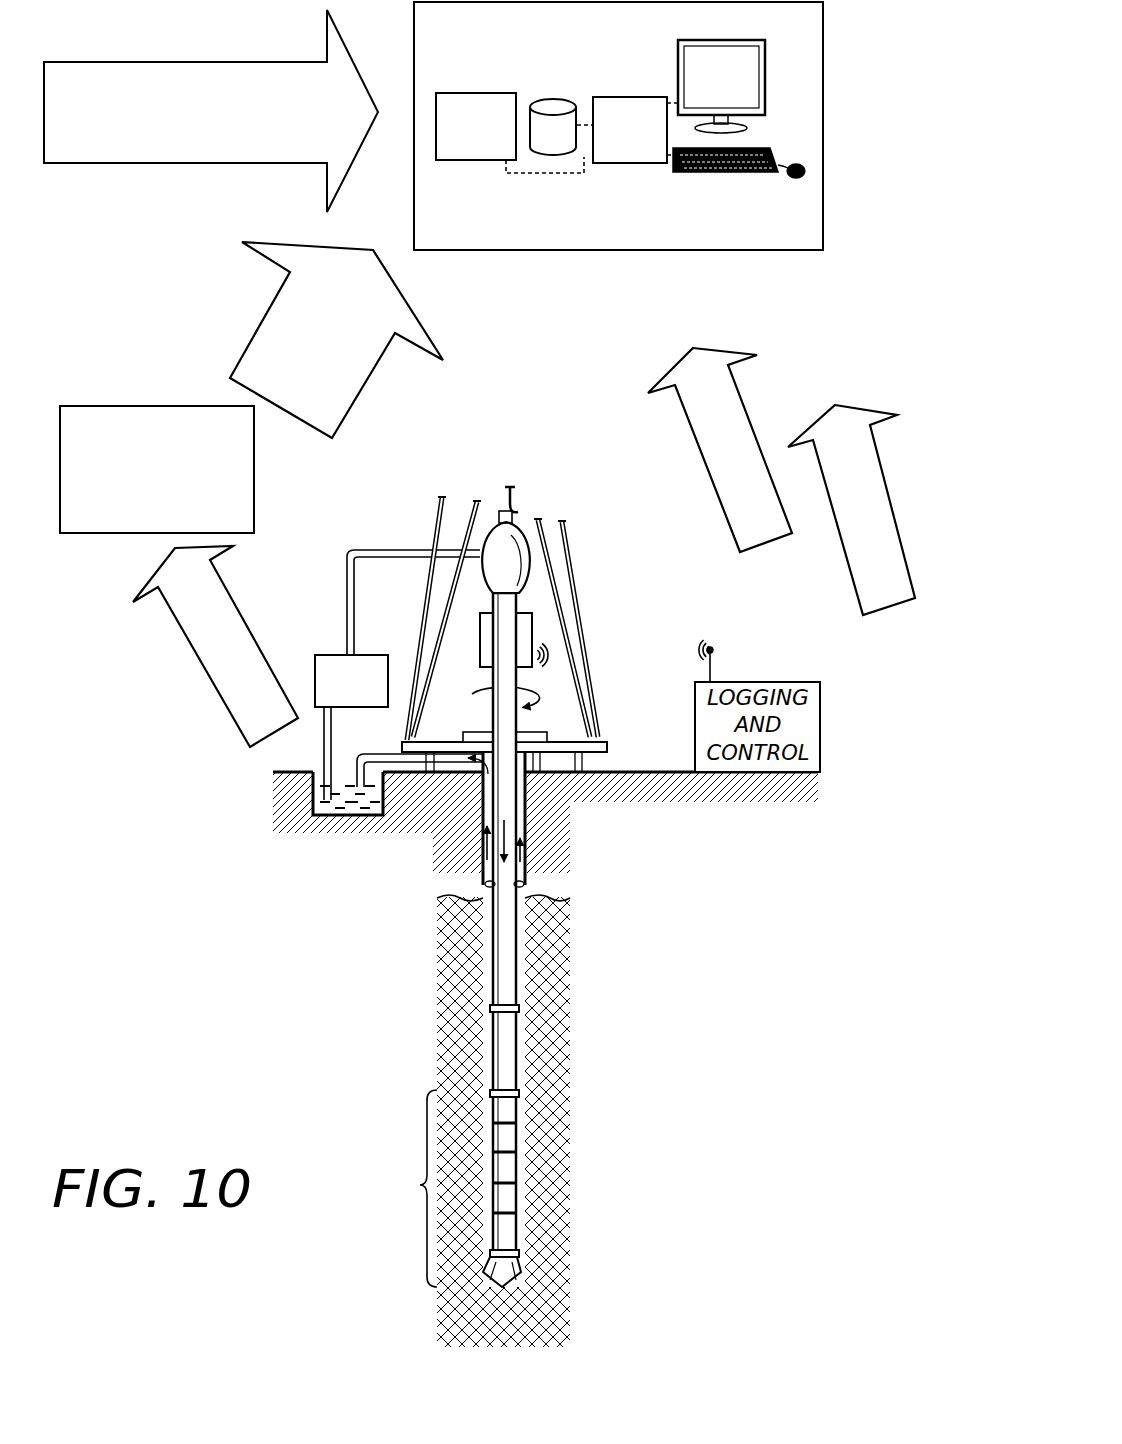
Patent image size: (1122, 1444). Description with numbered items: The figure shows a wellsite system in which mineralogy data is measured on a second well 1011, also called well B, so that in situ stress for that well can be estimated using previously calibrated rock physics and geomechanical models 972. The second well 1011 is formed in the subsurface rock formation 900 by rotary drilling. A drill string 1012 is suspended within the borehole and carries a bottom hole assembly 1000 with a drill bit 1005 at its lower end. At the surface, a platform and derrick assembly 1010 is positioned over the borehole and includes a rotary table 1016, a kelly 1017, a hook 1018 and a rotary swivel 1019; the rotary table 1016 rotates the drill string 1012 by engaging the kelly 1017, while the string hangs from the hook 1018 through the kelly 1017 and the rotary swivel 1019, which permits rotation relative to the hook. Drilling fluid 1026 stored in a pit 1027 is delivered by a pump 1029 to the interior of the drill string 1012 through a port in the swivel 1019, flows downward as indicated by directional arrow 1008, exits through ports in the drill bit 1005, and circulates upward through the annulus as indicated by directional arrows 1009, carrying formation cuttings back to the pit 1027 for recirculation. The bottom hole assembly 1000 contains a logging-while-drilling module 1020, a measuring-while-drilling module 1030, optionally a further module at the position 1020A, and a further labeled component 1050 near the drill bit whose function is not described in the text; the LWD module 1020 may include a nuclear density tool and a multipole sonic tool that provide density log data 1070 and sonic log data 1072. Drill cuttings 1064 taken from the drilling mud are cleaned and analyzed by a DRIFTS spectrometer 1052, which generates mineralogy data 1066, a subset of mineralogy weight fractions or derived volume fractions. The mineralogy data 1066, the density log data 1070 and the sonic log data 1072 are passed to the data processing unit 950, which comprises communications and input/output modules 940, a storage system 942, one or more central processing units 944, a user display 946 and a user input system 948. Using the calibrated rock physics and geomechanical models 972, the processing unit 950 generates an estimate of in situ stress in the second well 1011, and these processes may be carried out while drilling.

The rock physics and geomechanical models 972 is at (211, 111).
The data processing unit 950 is at (618, 126).
The communications and input/output modules 940 is at (476, 126).
The storage system 942 is at (562, 105).
The central processing units 944 is at (630, 130).
The user display 946 is at (721, 86).
The user input system 948 is at (790, 118).
The mineralogy data 1066 is at (410, 326).
The DRIFTS spectrometer 1052 is at (157, 469).
The drill cuttings 1064 is at (222, 683).
The pump 1029 is at (332, 672).
The drilling fluid 1026 is at (358, 815).
The pit 1027 is at (318, 801).
The second well 1011 is at (525, 820).
The rock formation 900 is at (503, 1121).
The platform and derrick assembly 1010 is at (606, 546).
The rotary table 1016 is at (540, 737).
The kelly 1017 is at (520, 718).
The drill string 1012 is at (503, 940).
The rotary swivel 1019 is at (508, 538).
The hook 1018 is at (507, 492).
The directional arrows 1009 is at (482, 853).
The directional arrow 1008 is at (492, 864).
The bottom hole assembly 1000 is at (402, 1188).
The logging-while-drilling module 1020 is at (508, 1138).
The measuring-while-drilling module 1030 is at (507, 1167).
The LWD and/or MWD module 1020A is at (507, 1197).
The logging tool 1050 is at (517, 1233).
The drill bit 1005 is at (522, 1270).
The sonic log data 1072 is at (738, 400).
The density log data 1070 is at (868, 455).